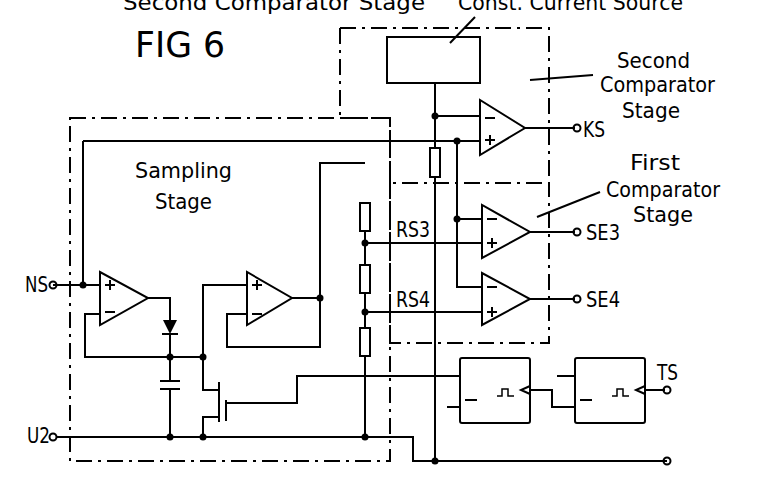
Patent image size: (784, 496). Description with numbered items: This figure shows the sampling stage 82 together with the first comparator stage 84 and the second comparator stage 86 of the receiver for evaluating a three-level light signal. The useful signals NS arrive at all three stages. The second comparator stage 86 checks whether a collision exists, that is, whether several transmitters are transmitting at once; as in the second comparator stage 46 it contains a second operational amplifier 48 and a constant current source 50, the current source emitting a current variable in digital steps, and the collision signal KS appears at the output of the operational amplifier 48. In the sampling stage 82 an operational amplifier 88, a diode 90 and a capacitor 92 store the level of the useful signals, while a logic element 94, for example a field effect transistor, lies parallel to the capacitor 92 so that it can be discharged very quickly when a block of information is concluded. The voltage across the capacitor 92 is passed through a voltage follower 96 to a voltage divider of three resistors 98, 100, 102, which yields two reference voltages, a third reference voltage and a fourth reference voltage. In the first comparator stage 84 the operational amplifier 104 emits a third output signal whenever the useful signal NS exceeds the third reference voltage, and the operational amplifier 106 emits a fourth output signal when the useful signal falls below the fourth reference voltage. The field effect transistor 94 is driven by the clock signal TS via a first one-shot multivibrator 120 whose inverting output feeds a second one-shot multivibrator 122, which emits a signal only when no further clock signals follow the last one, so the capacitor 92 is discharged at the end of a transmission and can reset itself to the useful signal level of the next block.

The second comparator stage 46 is at (421, 163).
The second operational amplifier 48 is at (530, 121).
The constant current source 50 is at (433, 60).
The sampling stage 82 is at (72, 168).
The first comparator stage 84 is at (543, 206).
The second comparator stage 86 is at (538, 63).
The operational amplifier 88 is at (135, 290).
The diode 90 is at (156, 350).
The capacitor 92 is at (157, 406).
The logic element 94 is at (331, 397).
The voltage follower 96 is at (283, 292).
The resistor 98 is at (352, 219).
The resistor 100 is at (349, 280).
The resistor 102 is at (349, 345).
The operational amplifier 104 is at (531, 223).
The operational amplifier 106 is at (531, 290).
The first one-shot multivibrator 120 is at (614, 408).
The second one-shot multivibrator 122 is at (511, 408).